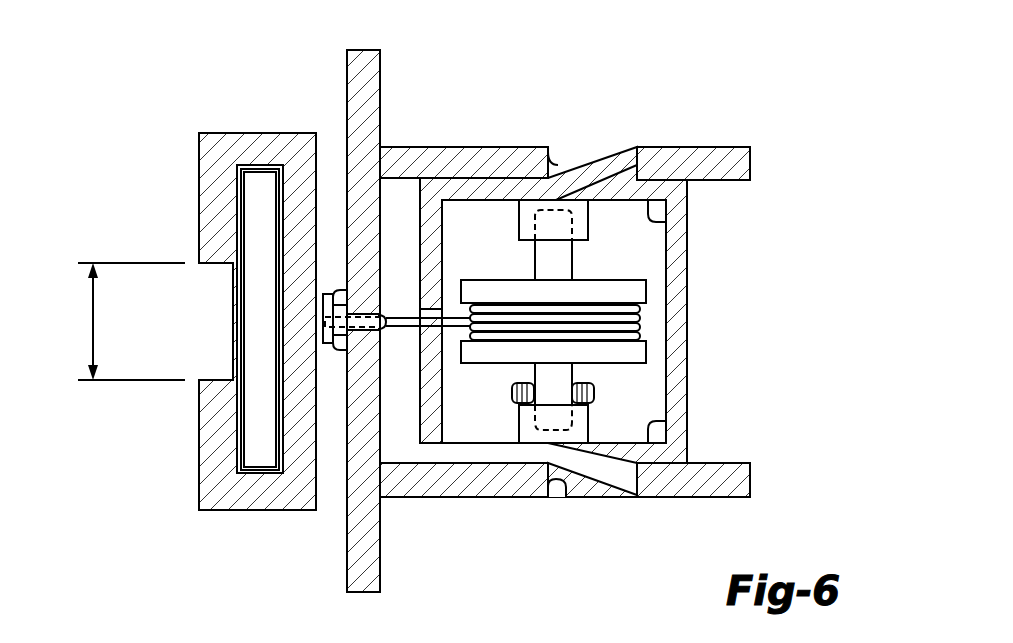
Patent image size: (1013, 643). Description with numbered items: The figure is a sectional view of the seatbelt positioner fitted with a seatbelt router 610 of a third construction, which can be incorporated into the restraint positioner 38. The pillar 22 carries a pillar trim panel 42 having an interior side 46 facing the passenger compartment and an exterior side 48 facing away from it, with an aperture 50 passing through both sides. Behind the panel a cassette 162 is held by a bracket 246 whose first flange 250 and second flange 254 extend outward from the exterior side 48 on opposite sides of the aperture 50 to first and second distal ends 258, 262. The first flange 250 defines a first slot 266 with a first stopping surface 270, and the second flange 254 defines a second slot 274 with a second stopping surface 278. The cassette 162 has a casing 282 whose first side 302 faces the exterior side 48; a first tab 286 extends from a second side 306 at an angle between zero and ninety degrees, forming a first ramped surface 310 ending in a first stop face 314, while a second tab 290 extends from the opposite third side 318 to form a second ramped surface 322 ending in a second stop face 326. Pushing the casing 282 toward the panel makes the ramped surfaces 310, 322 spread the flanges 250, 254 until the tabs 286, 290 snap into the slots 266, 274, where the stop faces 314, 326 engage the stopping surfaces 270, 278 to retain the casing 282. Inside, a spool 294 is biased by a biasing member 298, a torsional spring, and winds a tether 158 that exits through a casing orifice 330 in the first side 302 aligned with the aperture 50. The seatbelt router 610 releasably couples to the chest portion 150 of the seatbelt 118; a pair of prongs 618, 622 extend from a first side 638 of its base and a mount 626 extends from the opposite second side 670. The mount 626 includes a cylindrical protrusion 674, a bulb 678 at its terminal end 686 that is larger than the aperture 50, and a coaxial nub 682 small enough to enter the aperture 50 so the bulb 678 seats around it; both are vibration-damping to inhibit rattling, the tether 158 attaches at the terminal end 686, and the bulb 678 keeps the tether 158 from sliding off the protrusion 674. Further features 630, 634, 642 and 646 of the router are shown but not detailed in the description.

The pillar 22 is at (342, 68).
The restraint positioner 38 is at (142, 513).
The pillar trim panel 42 is at (366, 50).
The interior side 46 is at (342, 76).
The exterior side 48 is at (383, 92).
The aperture 50 is at (383, 336).
The seatbelt 118 is at (234, 464).
The chest portion 150 is at (247, 320).
The tether 158 is at (447, 325).
The cassette 162 is at (703, 250).
The bracket 246 is at (731, 136).
The first flange 250 is at (745, 128).
The second flange 254 is at (752, 493).
The first distal end 258 is at (750, 170).
The second distal end 262 is at (752, 470).
The first slot 266 is at (552, 152).
The first stopping surface 270 is at (640, 176).
The second slot 274 is at (558, 490).
The second stopping surface 278 is at (640, 470).
The casing 282 is at (690, 292).
The first tab 286 is at (608, 160).
The second tab 290 is at (598, 480).
The spool 294 is at (650, 350).
The biasing member 298 is at (600, 392).
The first side 302 is at (410, 445).
The second side 306 is at (668, 222).
The first ramped surface 310 is at (575, 178).
The first stop face 314 is at (638, 160).
The third side 318 is at (668, 425).
The second ramped surface 322 is at (575, 480).
The second stop face 326 is at (645, 488).
The casing orifice 330 is at (430, 311).
The seatbelt router 610 is at (200, 512).
The prong 618 is at (265, 495).
The prong 622 is at (250, 148).
The mount 626 is at (320, 322).
The holder rear face 630 is at (306, 512).
The holder rear wall 634 is at (308, 133).
The first side 638 is at (283, 415).
The electrode insert 642 is at (236, 206).
The opening height 646 is at (93, 322).
The second side 670 is at (330, 488).
The protrusion 674 is at (331, 350).
The bulb 678 is at (328, 292).
The nub 682 is at (383, 290).
The terminal end 686 is at (383, 350).